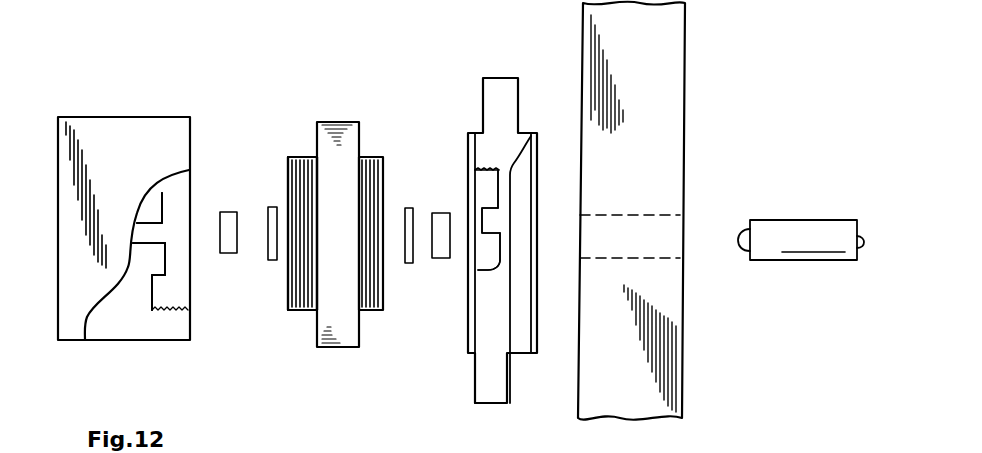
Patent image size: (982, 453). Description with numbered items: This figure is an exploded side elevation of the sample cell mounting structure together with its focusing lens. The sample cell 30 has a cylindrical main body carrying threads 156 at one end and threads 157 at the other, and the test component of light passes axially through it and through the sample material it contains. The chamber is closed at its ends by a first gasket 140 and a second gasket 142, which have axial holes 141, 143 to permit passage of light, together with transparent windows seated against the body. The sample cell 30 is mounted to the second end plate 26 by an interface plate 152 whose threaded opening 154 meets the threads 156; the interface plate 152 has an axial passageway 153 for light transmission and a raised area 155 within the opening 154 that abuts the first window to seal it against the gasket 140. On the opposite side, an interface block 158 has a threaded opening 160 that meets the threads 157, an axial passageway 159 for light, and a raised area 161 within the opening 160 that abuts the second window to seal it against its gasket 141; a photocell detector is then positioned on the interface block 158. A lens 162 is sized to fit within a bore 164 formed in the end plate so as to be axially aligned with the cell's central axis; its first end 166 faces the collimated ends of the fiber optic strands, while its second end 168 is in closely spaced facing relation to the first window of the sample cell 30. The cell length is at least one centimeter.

The sample cell 30 is at (294, 121).
The interface block 158 is at (124, 228).
The axial passageway 159 is at (166, 231).
The threaded opening 160 is at (164, 300).
The raised area 161 is at (168, 263).
The axial hole 141 is at (273, 206).
The axial hole 143 is at (226, 253).
The threads 156 is at (372, 157).
The threads 157 is at (305, 311).
The first gasket 140 is at (409, 264).
The second gasket 142 is at (440, 259).
The interface plate 152 is at (524, 74).
The threaded opening 154 is at (474, 175).
The raised area 155 is at (482, 222).
The axial passageway 153 is at (478, 262).
The second end plate 26 is at (667, 108).
The bore 164 is at (683, 257).
The lens 162 is at (797, 220).
The second end 168 is at (744, 238).
The first end 166 is at (863, 243).